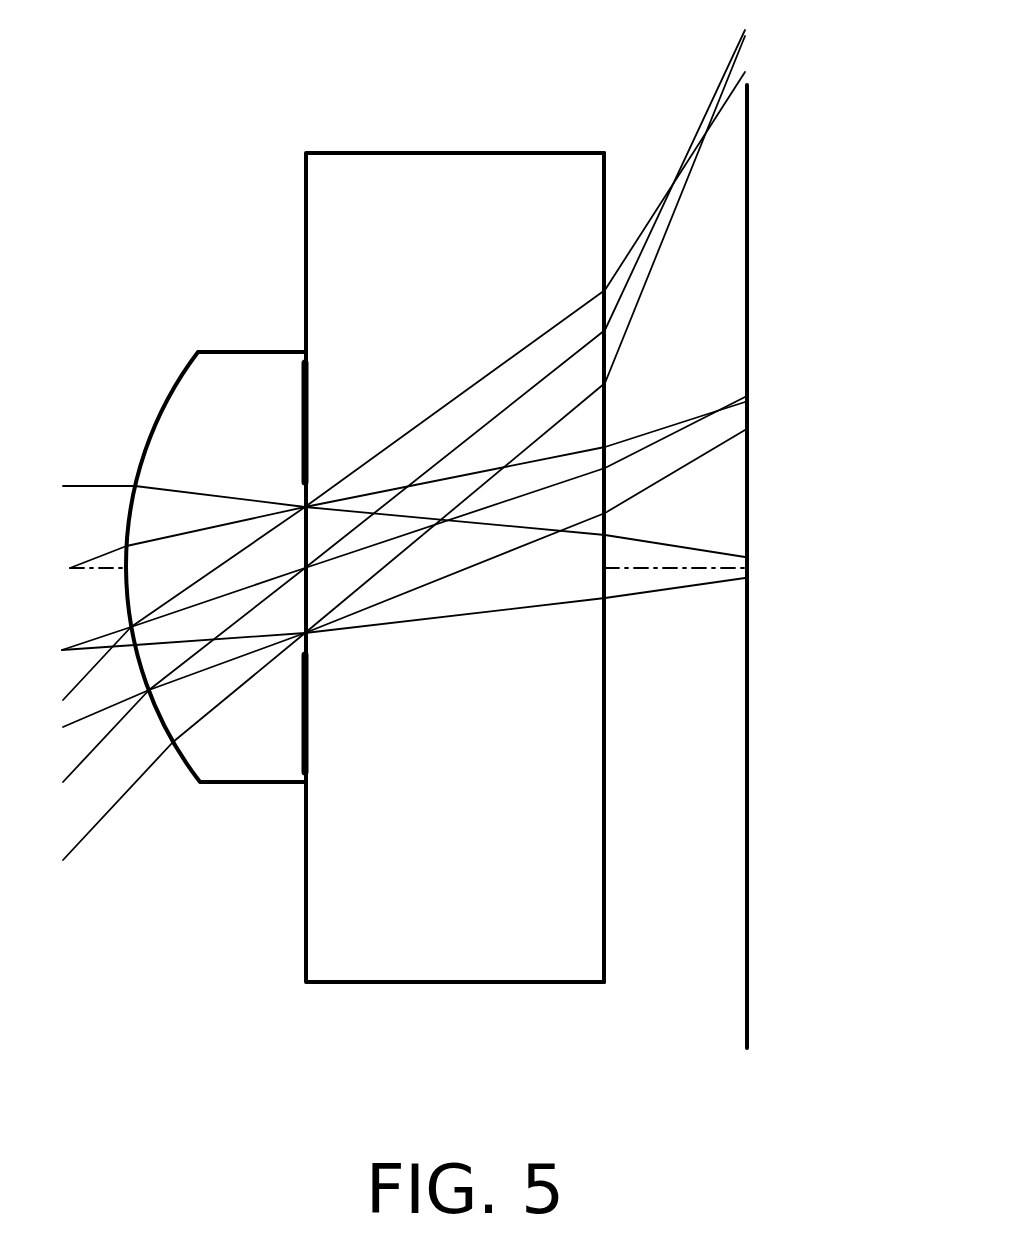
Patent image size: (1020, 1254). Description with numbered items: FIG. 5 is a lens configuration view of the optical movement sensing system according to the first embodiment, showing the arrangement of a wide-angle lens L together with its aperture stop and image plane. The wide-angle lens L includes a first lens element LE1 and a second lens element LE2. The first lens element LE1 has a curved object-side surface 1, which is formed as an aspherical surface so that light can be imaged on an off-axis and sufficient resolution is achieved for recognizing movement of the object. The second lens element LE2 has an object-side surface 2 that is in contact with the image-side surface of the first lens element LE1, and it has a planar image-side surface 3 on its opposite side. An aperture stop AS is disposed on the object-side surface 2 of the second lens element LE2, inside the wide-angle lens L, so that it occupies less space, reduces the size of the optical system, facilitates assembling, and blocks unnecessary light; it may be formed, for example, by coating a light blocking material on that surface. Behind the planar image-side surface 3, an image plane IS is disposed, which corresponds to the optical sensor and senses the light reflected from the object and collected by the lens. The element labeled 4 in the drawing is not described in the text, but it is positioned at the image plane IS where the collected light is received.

The object-side surface 1 is at (160, 428).
The object-side surface 2 is at (306, 216).
The planar image-side surface 3 is at (607, 193).
The image sensor 4 is at (747, 147).
The aperture stop AS is at (303, 757).
The first lens element LE1 is at (199, 591).
The second lens element LE2 is at (372, 522).
The wide-angle lens L is at (338, 522).
The image plane IS is at (836, 566).